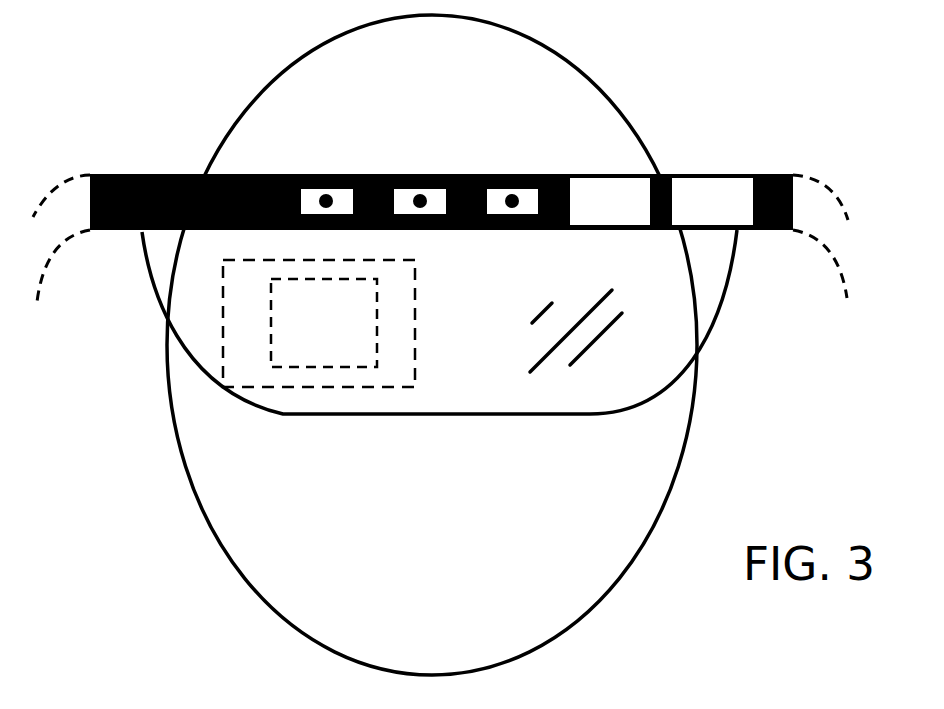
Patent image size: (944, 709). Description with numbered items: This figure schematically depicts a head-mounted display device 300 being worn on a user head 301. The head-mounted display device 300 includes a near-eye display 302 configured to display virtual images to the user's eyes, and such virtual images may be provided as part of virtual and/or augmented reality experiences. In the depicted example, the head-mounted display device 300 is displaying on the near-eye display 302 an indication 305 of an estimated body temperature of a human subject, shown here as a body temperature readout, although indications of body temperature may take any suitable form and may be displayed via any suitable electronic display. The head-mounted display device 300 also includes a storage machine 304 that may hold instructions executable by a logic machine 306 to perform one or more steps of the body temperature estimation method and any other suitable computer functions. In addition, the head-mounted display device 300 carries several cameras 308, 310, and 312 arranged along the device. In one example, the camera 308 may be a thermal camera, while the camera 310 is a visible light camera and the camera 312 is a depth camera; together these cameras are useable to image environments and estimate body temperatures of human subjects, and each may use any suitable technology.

The head-mounted display device 300 is at (106, 142).
The user head 301 is at (288, 68).
The near-eye display 302 is at (207, 380).
The storage machine 304 is at (589, 213).
The indication of an estimated body temperature 305 is at (378, 308).
The logic machine 306 is at (691, 213).
The camera 308 is at (326, 190).
The camera 310 is at (420, 190).
The camera 312 is at (512, 190).